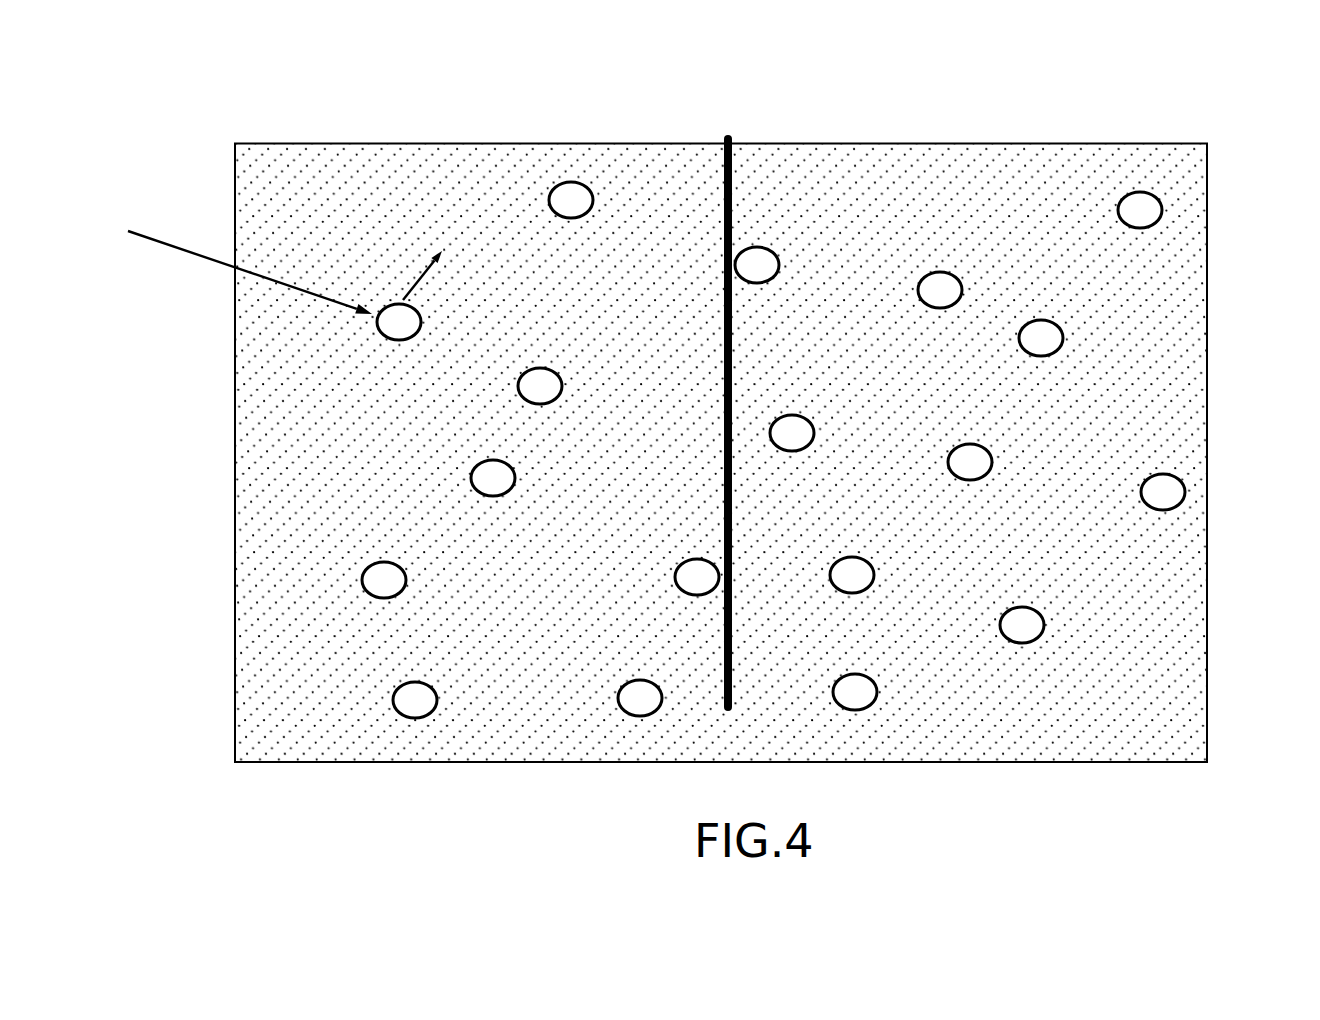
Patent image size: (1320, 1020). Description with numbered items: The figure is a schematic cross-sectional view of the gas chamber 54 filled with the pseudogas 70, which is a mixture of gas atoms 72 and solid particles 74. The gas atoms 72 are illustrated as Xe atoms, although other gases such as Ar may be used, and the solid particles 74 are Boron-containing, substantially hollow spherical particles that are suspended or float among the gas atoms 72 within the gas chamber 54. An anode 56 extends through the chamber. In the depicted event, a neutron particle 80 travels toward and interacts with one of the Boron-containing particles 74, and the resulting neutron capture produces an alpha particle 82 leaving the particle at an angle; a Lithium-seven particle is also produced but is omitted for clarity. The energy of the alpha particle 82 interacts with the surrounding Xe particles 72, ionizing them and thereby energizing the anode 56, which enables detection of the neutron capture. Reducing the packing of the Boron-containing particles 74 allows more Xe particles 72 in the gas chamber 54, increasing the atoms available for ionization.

The gas chamber 54 is at (1208, 170).
The anode 56 is at (732, 160).
The pseudogas 70 is at (347, 130).
The gas atoms 72 is at (939, 184).
The solid particles 74 is at (388, 338).
The neutron particle 80 is at (116, 210).
The alpha particle 82 is at (466, 233).